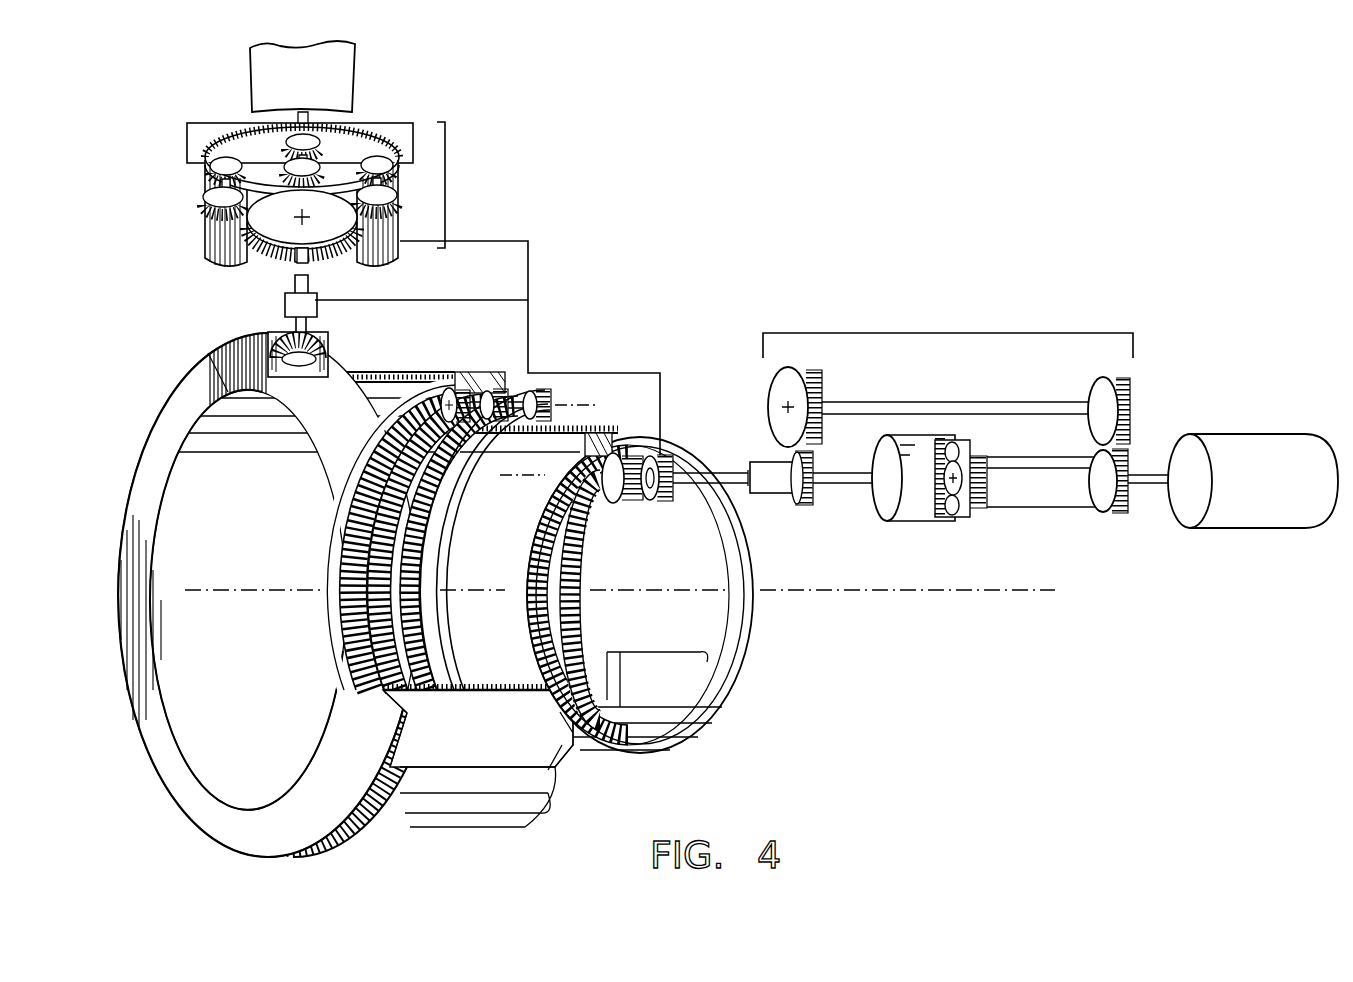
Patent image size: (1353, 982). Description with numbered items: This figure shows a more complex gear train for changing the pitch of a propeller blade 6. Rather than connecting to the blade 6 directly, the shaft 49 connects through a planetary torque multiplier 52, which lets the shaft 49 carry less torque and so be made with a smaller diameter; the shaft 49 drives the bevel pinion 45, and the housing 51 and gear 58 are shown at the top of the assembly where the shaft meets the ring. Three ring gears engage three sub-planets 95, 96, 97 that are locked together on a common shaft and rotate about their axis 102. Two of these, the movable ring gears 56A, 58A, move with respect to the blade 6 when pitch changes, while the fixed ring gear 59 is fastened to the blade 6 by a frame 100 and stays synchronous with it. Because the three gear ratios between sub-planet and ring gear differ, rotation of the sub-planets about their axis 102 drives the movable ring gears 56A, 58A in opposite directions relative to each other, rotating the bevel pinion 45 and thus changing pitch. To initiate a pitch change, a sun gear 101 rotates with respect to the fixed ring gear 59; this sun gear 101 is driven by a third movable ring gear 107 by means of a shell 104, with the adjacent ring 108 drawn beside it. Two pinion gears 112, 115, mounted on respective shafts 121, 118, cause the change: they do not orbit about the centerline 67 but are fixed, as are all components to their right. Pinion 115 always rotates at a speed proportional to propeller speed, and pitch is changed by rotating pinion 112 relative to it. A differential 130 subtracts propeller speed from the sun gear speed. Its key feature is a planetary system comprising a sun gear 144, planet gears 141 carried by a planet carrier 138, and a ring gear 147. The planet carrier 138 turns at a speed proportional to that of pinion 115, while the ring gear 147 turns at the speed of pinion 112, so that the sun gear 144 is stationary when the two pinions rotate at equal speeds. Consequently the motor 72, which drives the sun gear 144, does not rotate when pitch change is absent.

The blade 6 is at (314, 91).
The planetary torque multiplier 52 is at (450, 178).
The frame 100 is at (530, 250).
The shaft 49 is at (308, 262).
The bevel pinion 45 is at (309, 328).
The front ring 51 is at (270, 336).
The gear housing 58 is at (328, 344).
The sub-planet 95 is at (449, 388).
The sub-planet 96 is at (500, 392).
The sub-planet 97 is at (538, 395).
The axis 102 is at (353, 447).
The movable ring gear 56A is at (340, 503).
The movable ring gear 58A is at (377, 545).
The fixed ring gear 59 is at (418, 552).
The sun gear 101 is at (435, 494).
The shell 104 is at (496, 630).
The third movable ring gear 107 is at (530, 648).
The ring 108 is at (740, 628).
The centerline 67 is at (278, 592).
The pinion gear 112 is at (624, 503).
The pinion gear 115 is at (662, 500).
The shaft 121 is at (753, 462).
The shaft 118 is at (764, 482).
The differential 130 is at (935, 333).
The planet gears 141 is at (948, 444).
The sun gear 144 is at (947, 508).
The ring gear 147 is at (930, 510).
The planet carrier 138 is at (982, 497).
The motor 72 is at (1283, 507).